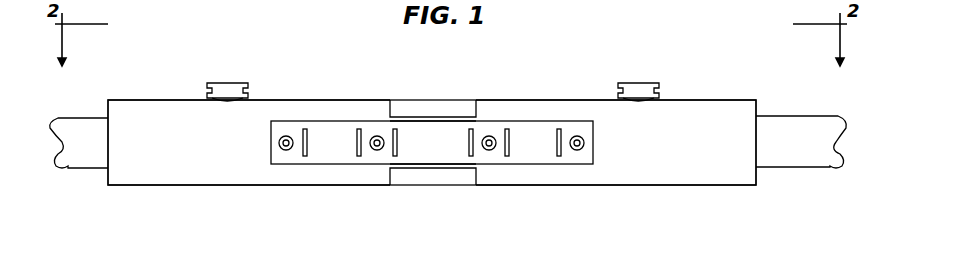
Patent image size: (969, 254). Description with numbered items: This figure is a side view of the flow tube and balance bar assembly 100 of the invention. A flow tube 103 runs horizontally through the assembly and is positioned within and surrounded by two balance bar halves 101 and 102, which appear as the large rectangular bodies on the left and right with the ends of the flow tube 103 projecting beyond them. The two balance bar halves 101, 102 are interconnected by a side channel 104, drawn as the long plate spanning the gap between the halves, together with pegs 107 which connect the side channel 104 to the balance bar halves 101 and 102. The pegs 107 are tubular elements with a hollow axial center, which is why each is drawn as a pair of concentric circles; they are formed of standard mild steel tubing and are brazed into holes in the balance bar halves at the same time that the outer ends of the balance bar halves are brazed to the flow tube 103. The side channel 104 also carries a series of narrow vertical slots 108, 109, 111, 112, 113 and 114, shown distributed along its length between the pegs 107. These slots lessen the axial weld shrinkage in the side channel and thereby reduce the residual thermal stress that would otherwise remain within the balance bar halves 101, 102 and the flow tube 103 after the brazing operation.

The connector assembly 100 is at (714, 27).
The balance bar half 101 is at (178, 172).
The balance bar half 102 is at (703, 178).
The flow tube 103 is at (86, 126).
The side channel 104 is at (440, 130).
The pegs 107 is at (287, 151).
The slot 108 is at (308, 140).
The slot 109 is at (355, 156).
The slot 111 is at (400, 156).
The slot 112 is at (468, 156).
The slot 113 is at (510, 156).
The slot 114 is at (555, 138).